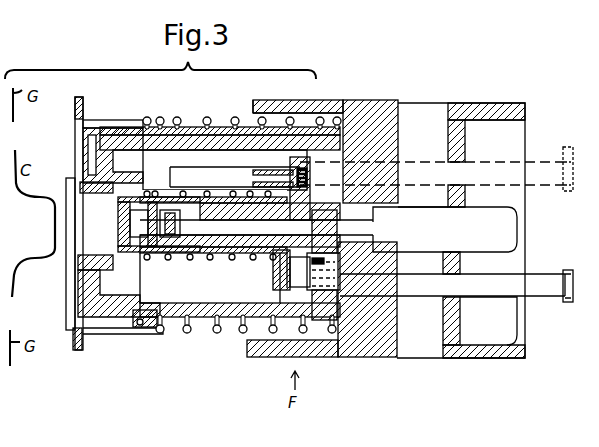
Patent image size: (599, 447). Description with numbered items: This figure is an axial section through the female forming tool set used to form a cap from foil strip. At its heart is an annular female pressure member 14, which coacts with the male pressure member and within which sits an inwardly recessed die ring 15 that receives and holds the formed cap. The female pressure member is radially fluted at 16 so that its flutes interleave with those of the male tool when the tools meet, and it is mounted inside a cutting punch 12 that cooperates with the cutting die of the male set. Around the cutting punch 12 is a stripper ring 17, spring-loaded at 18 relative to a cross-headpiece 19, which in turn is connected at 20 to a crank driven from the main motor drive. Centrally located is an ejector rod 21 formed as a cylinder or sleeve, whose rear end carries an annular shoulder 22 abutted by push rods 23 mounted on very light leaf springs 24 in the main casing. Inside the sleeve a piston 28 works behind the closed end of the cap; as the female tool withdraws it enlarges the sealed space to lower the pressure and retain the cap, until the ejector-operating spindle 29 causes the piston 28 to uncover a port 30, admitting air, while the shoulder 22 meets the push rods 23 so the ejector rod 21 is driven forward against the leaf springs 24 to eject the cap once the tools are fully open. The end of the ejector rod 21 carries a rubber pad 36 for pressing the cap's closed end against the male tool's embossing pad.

The cutting punch 12 is at (83, 126).
The annular female pressure member 14 is at (87, 155).
The die ring 15 is at (83, 190).
The flutes 16 is at (78, 298).
The stripper ring 17 is at (83, 108).
The spring loading 18 is at (207, 117).
The cross-headpiece 19 is at (372, 110).
The connection to crank 20 is at (482, 241).
The ejector rod 21 is at (170, 180).
The annular shoulder 22 is at (278, 279).
The push rods 23 is at (500, 162).
The leaf springs 24 is at (567, 152).
The piston 28 is at (220, 178).
The ejector-operating spindle 29 is at (240, 257).
The port 30 is at (208, 260).
The rubber pad 36 is at (118, 220).